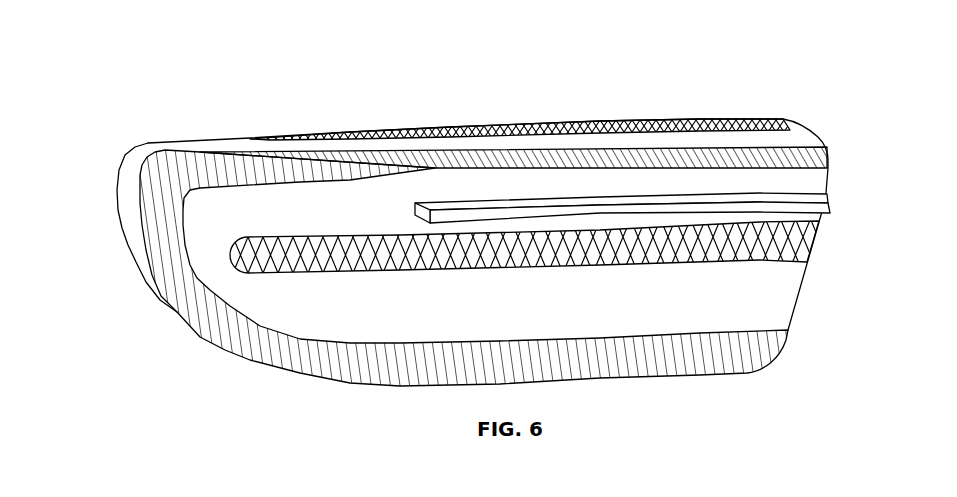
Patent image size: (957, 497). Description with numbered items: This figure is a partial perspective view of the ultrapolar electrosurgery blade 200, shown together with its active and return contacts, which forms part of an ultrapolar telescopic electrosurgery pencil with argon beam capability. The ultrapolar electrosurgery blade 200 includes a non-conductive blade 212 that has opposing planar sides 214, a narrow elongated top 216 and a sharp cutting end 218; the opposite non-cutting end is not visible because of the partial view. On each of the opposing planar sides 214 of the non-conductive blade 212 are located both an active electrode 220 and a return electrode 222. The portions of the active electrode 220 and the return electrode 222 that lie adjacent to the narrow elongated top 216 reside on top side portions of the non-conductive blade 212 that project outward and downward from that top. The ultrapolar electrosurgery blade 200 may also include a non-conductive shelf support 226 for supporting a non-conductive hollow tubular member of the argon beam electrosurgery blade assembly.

The ultrapolar electrosurgery blade 200 is at (672, 73).
The non-conductive blade 212 is at (312, 325).
The opposing planar sides 214 is at (502, 308).
The narrow elongated top 216 is at (250, 146).
The sharp cutting end 218 is at (108, 190).
The active electrode 220 is at (520, 124).
The return electrode 222 is at (818, 150).
The non-conductive shelf support 226 is at (821, 198).